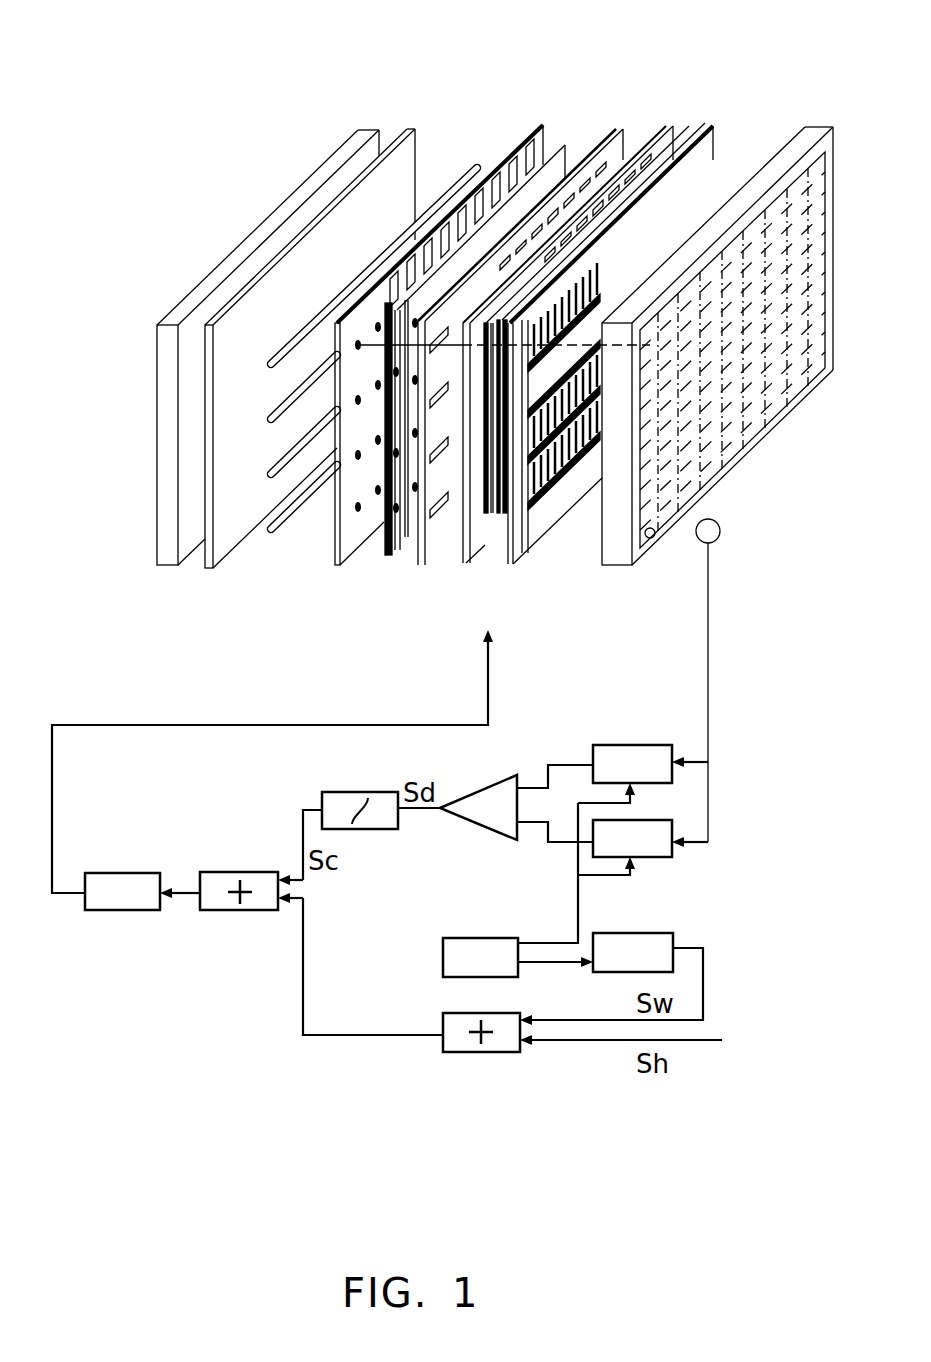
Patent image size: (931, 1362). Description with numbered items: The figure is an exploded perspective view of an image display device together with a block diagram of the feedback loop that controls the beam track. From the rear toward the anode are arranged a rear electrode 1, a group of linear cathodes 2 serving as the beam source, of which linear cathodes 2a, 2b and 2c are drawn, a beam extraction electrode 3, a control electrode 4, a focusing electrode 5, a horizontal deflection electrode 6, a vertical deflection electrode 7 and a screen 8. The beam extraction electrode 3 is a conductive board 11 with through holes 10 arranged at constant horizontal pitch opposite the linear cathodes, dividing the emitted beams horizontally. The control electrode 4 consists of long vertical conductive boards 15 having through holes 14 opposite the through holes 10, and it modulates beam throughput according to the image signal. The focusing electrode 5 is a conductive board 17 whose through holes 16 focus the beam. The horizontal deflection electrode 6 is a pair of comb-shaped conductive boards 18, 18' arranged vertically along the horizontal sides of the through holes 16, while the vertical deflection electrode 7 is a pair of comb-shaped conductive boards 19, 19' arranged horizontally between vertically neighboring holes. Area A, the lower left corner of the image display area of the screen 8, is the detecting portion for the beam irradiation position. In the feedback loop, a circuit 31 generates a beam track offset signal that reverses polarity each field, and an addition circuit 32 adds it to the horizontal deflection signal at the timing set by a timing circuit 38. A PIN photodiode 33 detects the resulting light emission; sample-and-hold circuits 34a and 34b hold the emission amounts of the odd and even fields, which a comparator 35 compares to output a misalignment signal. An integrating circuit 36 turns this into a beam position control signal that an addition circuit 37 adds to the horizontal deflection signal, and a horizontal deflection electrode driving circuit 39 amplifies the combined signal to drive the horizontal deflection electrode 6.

The rear electrode 1 is at (418, 127).
The group of linear cathodes 2 is at (434, 267).
The linear cathode 2a is at (279, 360).
The linear cathode 2b is at (279, 415).
The linear cathode 2c is at (279, 470).
The beam extraction electrode 3 is at (408, 335).
The control electrode 4 is at (578, 118).
The focusing electrode 5 is at (542, 323).
The horizontal deflection electrode 6 is at (591, 328).
The vertical deflection electrode 7 is at (636, 337).
The screen 8 is at (717, 313).
The through holes 10 is at (357, 511).
The conductive board 11 is at (339, 561).
The through holes 14 is at (397, 514).
The conductive boards 15 is at (387, 552).
The through holes 16 is at (438, 521).
The conductive board 17 is at (407, 536).
The comb-shaped conductive board 18 is at (568, 375).
The comb-shaped conductive board 18' is at (580, 389).
The comb-shaped conductive board 19 is at (610, 398).
The comb-shaped conductive board 19' is at (570, 442).
The circuit for generating a beam track offset signal 31 is at (630, 935).
The addition circuit 32 is at (445, 1021).
The PIN photodiode 33 is at (720, 528).
The sample-and-hold circuit 34a is at (645, 748).
The sample-and-hold circuit 34b is at (650, 855).
The comparator 35 is at (494, 820).
The integrating circuit 36 is at (350, 794).
The addition circuit 37 is at (222, 908).
The timing circuit 38 is at (445, 953).
The horizontal deflection electrode driving circuit 39 is at (116, 908).
The area A is at (652, 540).